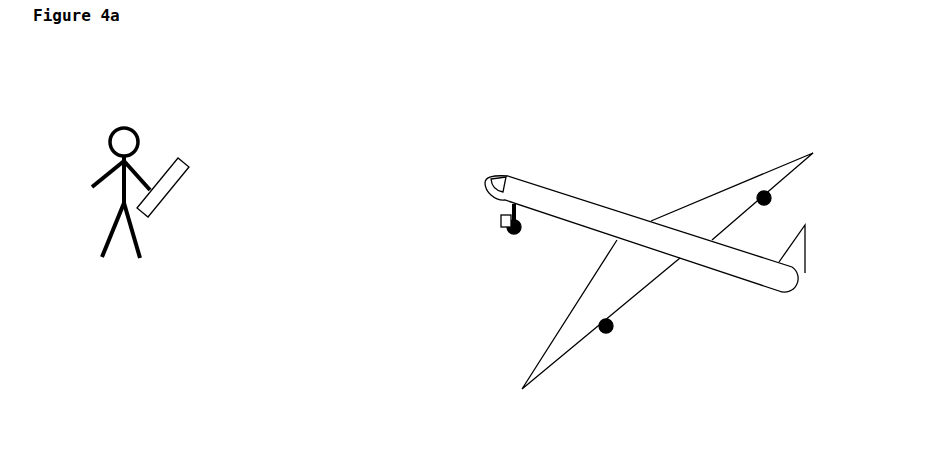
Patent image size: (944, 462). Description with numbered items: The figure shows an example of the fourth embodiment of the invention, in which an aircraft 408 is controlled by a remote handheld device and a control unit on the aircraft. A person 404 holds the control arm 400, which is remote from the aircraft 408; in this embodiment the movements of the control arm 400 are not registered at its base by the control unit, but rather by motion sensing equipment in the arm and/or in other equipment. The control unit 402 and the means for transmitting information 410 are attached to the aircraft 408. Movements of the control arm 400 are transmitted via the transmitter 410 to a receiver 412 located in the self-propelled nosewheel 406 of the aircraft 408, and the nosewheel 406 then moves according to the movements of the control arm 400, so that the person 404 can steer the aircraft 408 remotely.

The control arm 400 is at (190, 166).
The control unit 402 is at (498, 175).
The user 404 is at (108, 247).
The self-propelled nosewheel 406 is at (508, 232).
The aircraft 408 is at (615, 219).
The means for transmitting information 410 is at (508, 176).
The receiver 412 is at (502, 222).